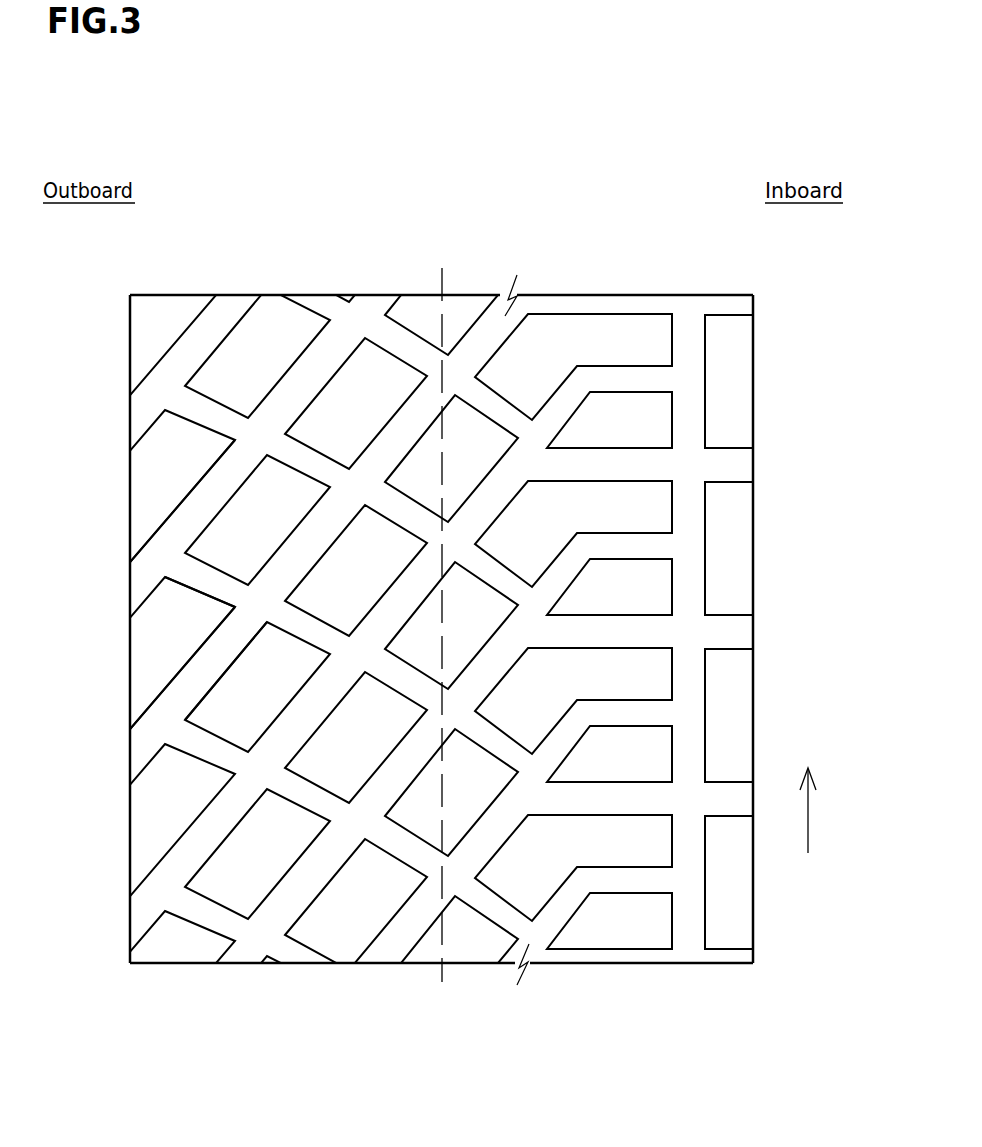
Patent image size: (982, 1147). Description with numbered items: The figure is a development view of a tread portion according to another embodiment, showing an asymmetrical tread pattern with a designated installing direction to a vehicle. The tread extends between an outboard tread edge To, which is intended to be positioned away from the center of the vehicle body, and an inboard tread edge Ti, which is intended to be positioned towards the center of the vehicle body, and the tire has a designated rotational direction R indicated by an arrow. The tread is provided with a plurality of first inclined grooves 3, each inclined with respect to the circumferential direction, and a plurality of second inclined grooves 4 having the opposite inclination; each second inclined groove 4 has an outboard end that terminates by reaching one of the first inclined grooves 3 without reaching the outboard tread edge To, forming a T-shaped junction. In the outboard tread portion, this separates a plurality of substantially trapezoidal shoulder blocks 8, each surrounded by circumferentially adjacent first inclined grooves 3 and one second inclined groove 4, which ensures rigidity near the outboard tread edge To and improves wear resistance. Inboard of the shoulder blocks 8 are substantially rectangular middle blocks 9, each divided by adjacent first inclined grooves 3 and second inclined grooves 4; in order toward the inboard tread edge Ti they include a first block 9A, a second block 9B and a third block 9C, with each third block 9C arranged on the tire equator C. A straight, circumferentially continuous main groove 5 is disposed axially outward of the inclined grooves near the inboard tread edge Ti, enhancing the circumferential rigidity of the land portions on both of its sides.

The first inclined groove 3 is at (190, 668).
The second inclined groove 4 is at (207, 578).
The main groove 5 is at (688, 548).
The shoulder block 8 is at (155, 490).
The middle block 9 is at (351, 634).
The first block 9A is at (230, 718).
The second block 9B is at (327, 767).
The third block 9C is at (418, 812).
The outboard tread edge To is at (130, 357).
The inboard tread edge Ti is at (753, 357).
The tire equator C is at (441, 611).
The rotational direction R is at (810, 826).